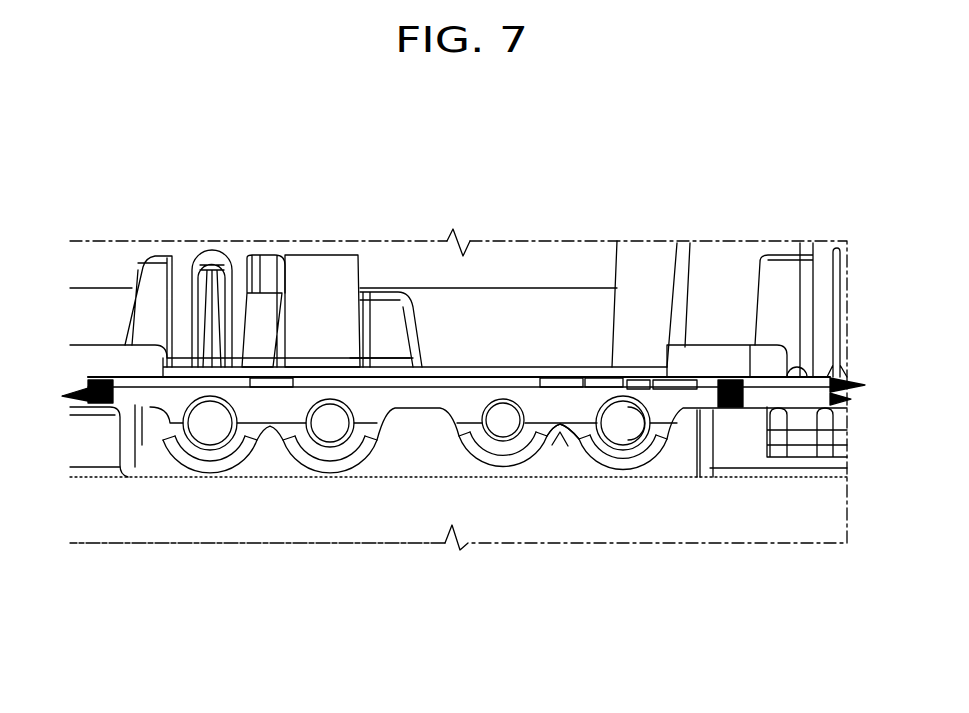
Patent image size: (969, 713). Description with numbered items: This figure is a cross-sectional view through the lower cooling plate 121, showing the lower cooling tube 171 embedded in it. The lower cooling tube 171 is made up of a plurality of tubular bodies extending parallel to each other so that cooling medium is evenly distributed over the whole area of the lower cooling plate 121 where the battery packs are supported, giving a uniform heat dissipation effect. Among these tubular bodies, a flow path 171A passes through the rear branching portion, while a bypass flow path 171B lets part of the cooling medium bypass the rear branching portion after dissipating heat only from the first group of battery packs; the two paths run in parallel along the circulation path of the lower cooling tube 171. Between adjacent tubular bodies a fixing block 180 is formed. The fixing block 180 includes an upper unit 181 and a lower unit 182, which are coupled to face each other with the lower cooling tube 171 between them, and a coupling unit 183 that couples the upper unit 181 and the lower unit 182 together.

The lower cooling plate 121 is at (732, 238).
The lower cooling tube 171 is at (268, 513).
The flow path 171A is at (210, 448).
The bypass flow path 171B is at (327, 437).
The fixing block 180 is at (538, 408).
The upper unit 181 is at (538, 400).
The lower unit 182 is at (588, 435).
The coupling unit 183 is at (653, 440).